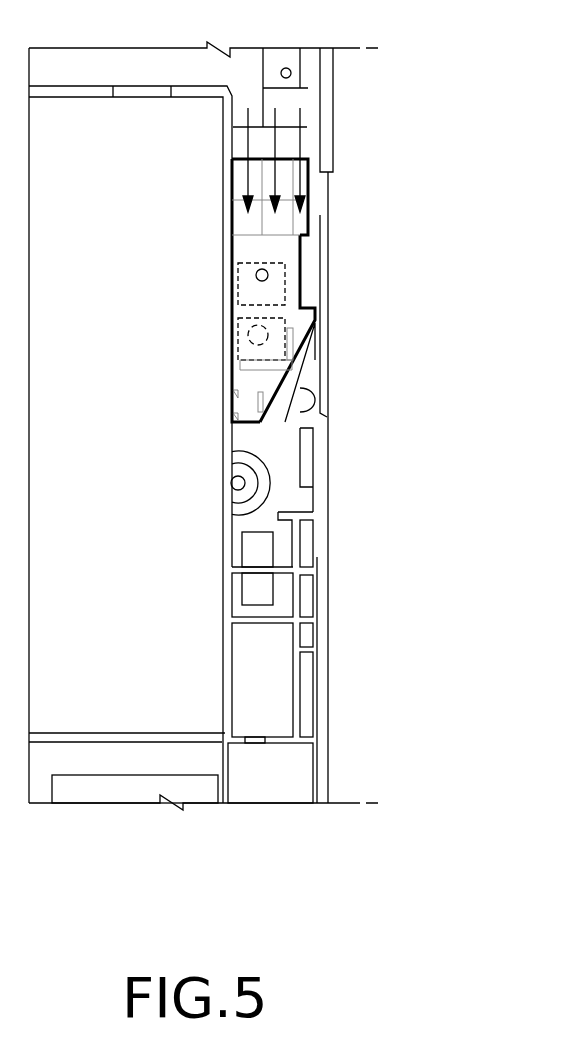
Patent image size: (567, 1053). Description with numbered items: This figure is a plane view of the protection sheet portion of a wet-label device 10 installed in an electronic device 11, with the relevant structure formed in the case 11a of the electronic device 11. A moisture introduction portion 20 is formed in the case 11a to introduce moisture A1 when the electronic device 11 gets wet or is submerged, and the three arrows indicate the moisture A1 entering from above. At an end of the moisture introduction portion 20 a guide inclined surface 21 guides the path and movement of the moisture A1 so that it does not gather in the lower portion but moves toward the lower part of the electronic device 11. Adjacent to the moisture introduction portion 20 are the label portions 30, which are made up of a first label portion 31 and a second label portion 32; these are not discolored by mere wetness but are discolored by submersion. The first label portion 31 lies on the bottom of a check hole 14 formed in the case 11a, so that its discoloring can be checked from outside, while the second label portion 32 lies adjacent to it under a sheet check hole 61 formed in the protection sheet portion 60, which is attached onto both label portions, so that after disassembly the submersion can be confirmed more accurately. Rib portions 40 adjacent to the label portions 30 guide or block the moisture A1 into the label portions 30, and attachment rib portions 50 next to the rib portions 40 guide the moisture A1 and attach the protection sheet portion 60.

The wet-label device 10 is at (422, 88).
The electronic device 11 is at (333, 517).
The case 11a is at (318, 557).
The check hole 14 is at (247, 333).
The moisture introduction portion 20 is at (318, 356).
The guide inclined surface 21 is at (300, 400).
The label portions 30 is at (374, 287).
The first label portion 31 is at (282, 325).
The second label portion 32 is at (280, 270).
The rib portions 40 is at (300, 332).
The attachment rib portions 50 is at (258, 408).
The protection sheet portion 60 is at (243, 248).
The sheet check hole 61 is at (256, 275).
The moisture A1 is at (248, 148).